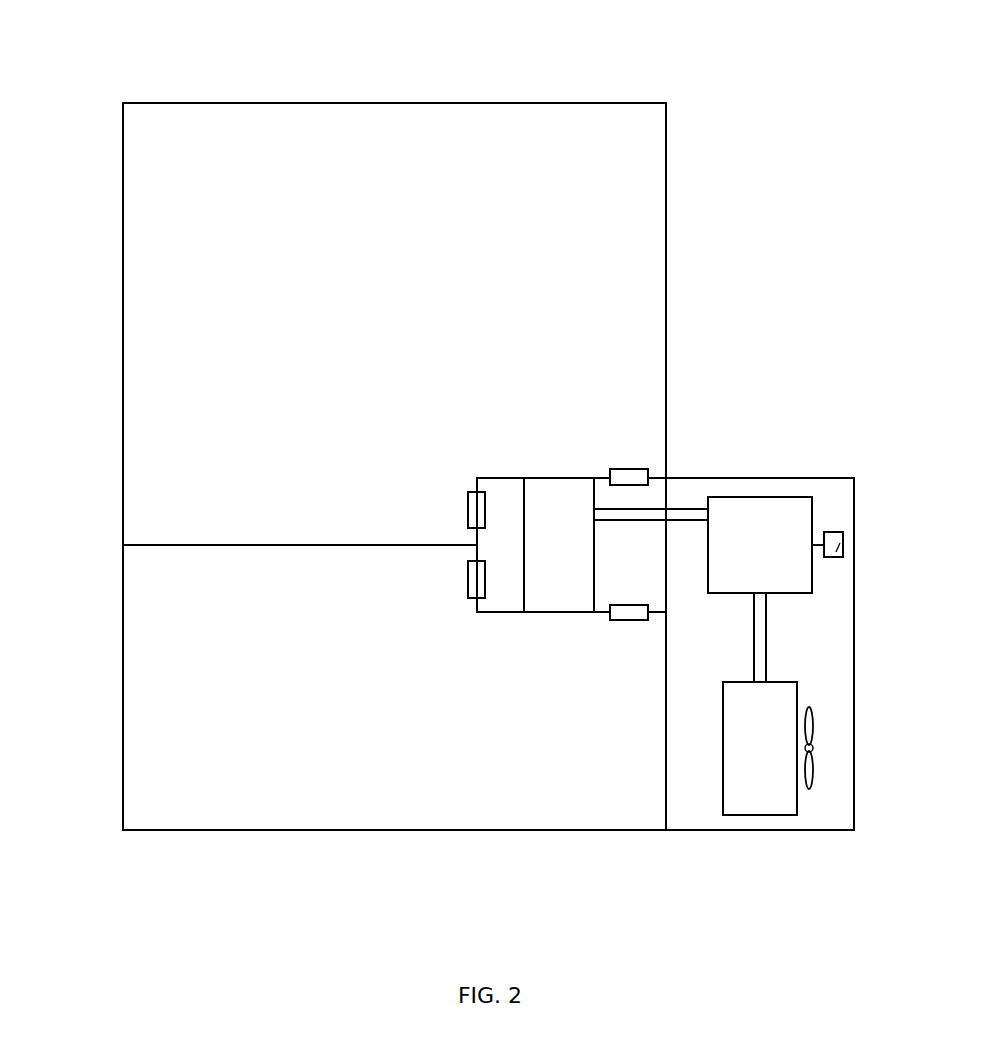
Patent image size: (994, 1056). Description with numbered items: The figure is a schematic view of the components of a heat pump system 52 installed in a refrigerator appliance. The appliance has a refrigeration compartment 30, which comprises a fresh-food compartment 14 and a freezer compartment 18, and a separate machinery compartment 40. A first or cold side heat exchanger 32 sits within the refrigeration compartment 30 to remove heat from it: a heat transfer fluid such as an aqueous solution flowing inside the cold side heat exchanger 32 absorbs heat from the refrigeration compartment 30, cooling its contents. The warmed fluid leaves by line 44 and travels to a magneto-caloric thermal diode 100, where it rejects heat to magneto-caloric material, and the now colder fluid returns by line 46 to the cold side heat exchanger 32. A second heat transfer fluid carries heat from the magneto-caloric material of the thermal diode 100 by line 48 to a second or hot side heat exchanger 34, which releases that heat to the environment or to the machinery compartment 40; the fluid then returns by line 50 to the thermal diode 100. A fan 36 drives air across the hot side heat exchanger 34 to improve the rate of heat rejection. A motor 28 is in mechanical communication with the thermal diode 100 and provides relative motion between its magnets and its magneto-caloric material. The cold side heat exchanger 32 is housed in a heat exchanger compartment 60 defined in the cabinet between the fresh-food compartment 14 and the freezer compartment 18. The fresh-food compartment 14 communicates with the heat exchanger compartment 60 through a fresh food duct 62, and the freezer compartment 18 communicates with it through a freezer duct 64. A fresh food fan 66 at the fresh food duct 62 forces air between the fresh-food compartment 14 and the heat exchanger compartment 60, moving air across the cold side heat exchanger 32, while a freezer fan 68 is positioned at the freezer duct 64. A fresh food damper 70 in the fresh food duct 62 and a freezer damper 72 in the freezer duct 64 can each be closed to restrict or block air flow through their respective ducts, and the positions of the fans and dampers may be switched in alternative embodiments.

The fresh-food compartment 14 is at (644, 200).
The freezer compartment 18 is at (146, 754).
The motor 28 is at (845, 537).
The refrigeration compartment 30 is at (240, 125).
The cold side heat exchanger 32 is at (543, 510).
The hot side heat exchanger 34 is at (760, 790).
The fan 36 is at (815, 748).
The machinery compartment 40 is at (833, 623).
The line 44 is at (681, 505).
The line 46 is at (640, 523).
The line 48 is at (754, 658).
The line 50 is at (766, 665).
The heat pump system 52 is at (833, 485).
The heat exchanger compartment 60 is at (504, 592).
The fresh food duct 62 is at (466, 482).
The freezer duct 64 is at (466, 610).
The fresh food fan 66 is at (468, 508).
The freezer fan 68 is at (478, 583).
The fresh food damper 70 is at (624, 478).
The freezer damper 72 is at (627, 613).
The magneto-caloric thermal diode 100 is at (750, 518).